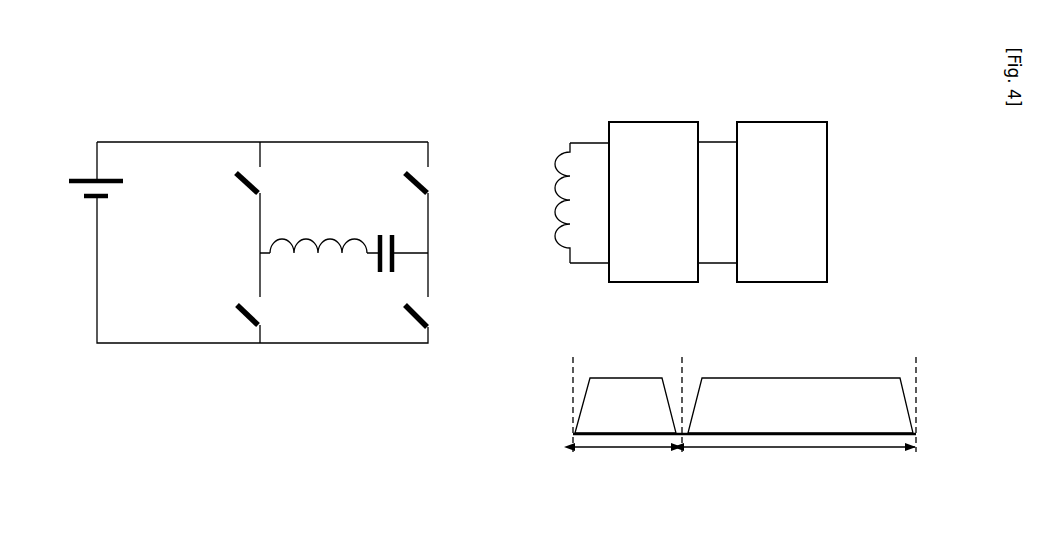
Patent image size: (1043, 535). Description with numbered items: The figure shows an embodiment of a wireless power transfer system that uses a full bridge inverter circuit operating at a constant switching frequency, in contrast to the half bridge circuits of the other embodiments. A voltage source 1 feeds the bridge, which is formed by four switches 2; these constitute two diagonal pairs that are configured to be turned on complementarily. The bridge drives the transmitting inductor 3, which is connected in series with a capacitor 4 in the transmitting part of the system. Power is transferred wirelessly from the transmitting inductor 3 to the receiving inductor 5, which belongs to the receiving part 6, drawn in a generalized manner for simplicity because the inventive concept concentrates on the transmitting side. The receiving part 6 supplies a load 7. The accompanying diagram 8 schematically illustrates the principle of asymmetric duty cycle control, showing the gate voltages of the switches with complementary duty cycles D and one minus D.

The voltage source 1 is at (93, 177).
The switches 2 is at (435, 312).
The transmitting inductor 3 is at (303, 230).
The capacitor 4 is at (370, 263).
The receiving inductor 5 is at (558, 150).
The receiving part 6 is at (637, 121).
The load 7 is at (767, 121).
The diagram 8 is at (922, 407).